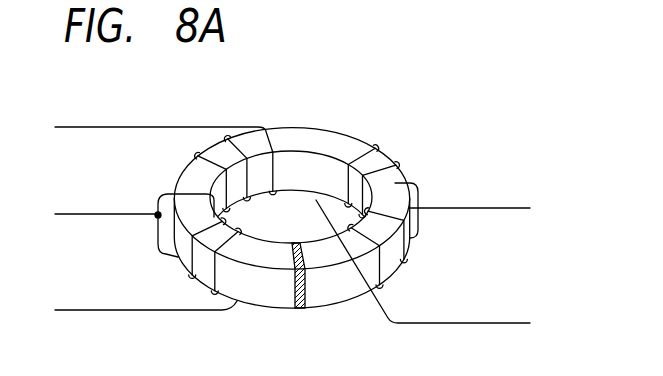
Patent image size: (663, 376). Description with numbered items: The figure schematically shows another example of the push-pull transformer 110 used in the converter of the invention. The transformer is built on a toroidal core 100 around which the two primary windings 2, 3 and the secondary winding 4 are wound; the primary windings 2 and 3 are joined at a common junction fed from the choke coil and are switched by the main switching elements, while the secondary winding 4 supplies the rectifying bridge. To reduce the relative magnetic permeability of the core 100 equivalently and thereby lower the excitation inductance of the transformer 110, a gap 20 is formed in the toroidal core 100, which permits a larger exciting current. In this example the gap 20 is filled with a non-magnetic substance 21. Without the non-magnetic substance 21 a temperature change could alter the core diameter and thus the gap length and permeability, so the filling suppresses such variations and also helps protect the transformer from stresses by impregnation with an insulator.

The push-pull transformer 110 is at (313, 98).
The toroidal core 100 is at (343, 142).
The primary winding 2 is at (53, 126).
The primary winding 3 is at (53, 214).
The secondary winding 4 is at (536, 205).
The gap 20 is at (297, 312).
The non-magnetic substance 21 is at (307, 288).